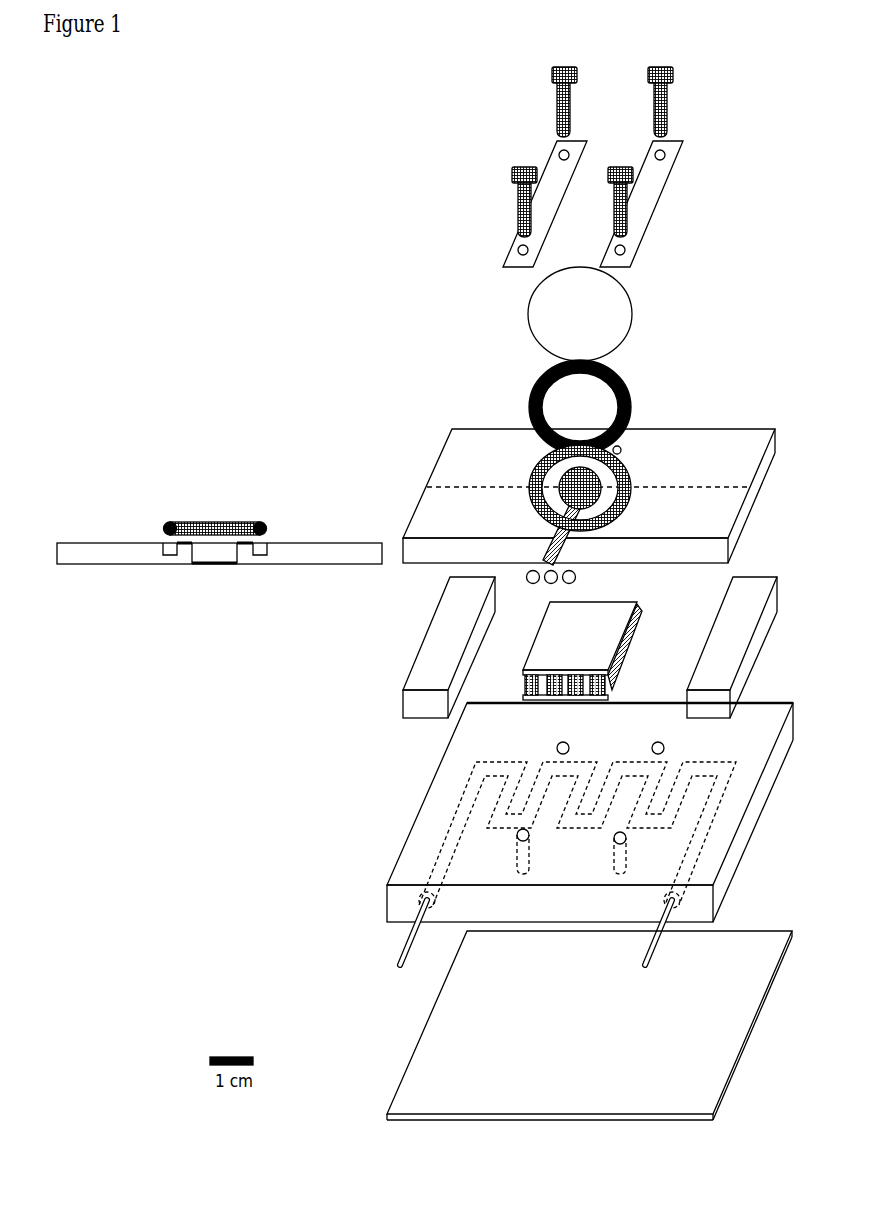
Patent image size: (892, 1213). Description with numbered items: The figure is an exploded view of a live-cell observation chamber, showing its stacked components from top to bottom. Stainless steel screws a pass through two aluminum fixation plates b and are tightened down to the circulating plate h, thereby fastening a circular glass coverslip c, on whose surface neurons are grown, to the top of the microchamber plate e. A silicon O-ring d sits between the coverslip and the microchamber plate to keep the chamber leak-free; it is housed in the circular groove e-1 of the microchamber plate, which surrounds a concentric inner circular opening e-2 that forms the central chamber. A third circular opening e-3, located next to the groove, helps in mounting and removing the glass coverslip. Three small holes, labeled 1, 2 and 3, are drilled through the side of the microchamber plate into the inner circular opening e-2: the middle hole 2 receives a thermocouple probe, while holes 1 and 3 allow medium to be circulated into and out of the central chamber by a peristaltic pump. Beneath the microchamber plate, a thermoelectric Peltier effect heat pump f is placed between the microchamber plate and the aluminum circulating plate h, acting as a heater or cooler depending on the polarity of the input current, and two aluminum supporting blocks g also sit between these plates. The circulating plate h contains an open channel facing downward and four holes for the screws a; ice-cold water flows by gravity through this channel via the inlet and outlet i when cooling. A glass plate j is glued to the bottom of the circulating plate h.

The stainless steel screws a is at (622, 102).
The aluminum fixation plate b is at (593, 204).
The circular glass coverslip c is at (592, 314).
The silicon O-ring d is at (411, 447).
The microchamber plate e is at (416, 512).
The circular groove e-1 is at (617, 507).
The inner circular opening e-2 is at (592, 480).
The third circular opening e-3 is at (622, 450).
The hole 1 is at (533, 577).
The hole 2 is at (551, 577).
The hole 3 is at (569, 577).
The thermoelectric Peltier effect heat pump f is at (582, 651).
The supporting aluminum blocks g is at (590, 647).
The circulating plate h is at (590, 812).
The inlet and outlet of ice-cold water i is at (536, 935).
The glass plate j is at (589, 1025).